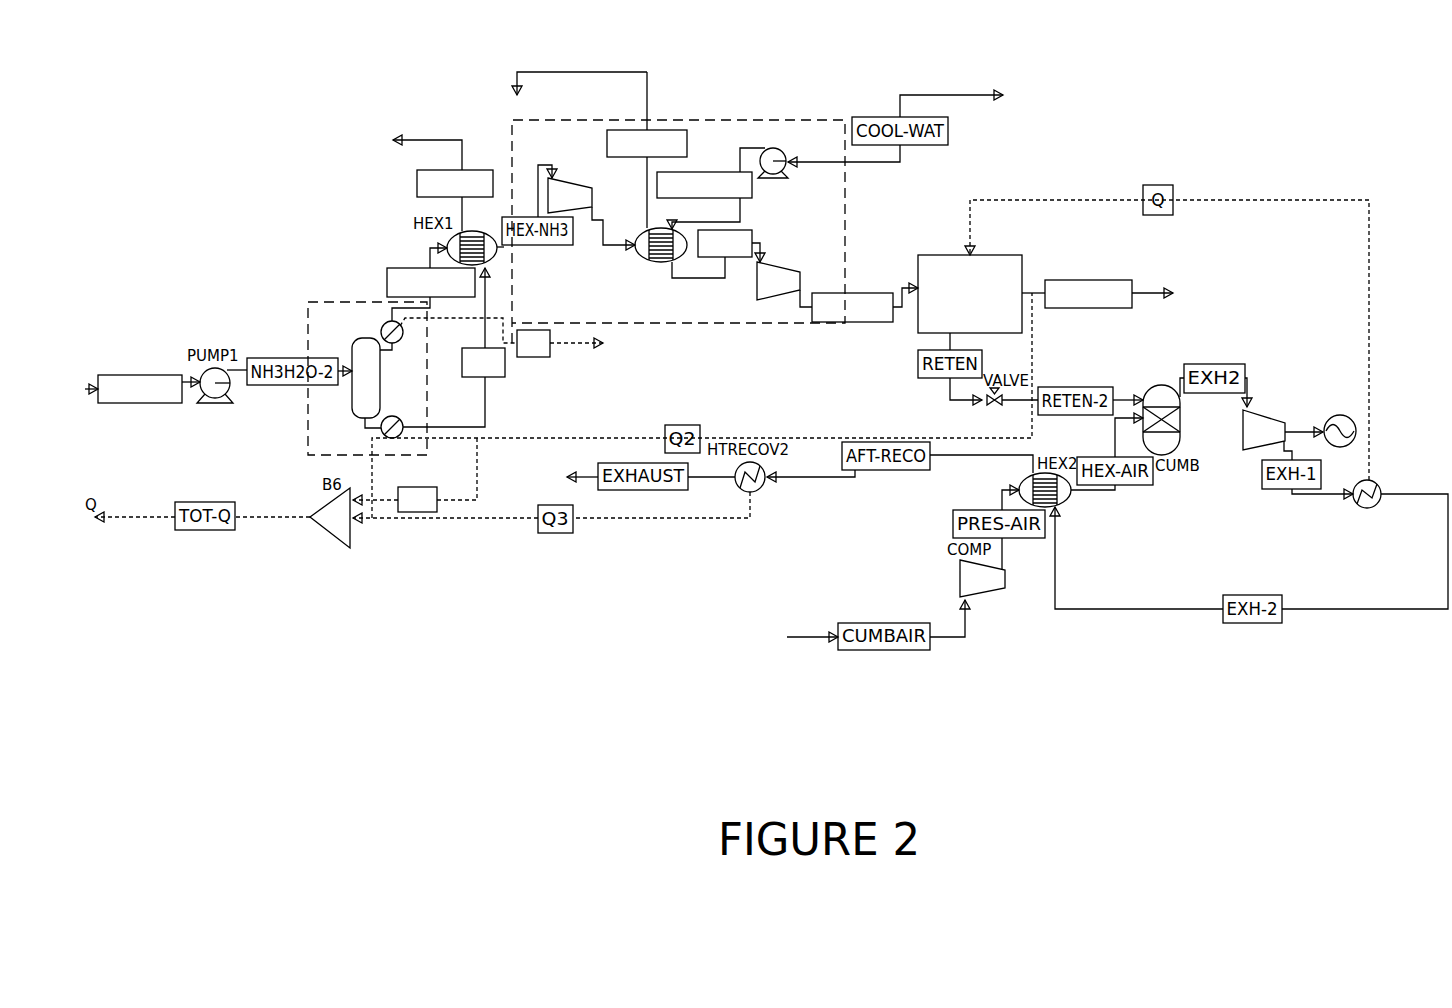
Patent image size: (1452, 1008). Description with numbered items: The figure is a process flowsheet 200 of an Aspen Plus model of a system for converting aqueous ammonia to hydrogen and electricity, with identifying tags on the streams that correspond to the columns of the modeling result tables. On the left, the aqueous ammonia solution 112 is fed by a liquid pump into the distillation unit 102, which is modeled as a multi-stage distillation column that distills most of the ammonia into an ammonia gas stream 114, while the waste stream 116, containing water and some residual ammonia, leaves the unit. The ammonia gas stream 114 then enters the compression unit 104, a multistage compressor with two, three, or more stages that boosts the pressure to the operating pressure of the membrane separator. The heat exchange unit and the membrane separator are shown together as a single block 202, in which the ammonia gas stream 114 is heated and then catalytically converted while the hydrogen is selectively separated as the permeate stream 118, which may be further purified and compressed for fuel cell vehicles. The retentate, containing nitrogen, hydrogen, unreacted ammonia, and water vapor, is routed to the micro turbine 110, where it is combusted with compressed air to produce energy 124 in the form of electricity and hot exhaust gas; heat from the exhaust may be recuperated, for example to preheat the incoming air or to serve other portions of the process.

The process flowsheet 200 is at (793, 803).
The distillation unit 102 is at (310, 310).
The compression unit 104 is at (727, 120).
The micro turbine 110 is at (1252, 407).
The aqueous ammonia solution 112 is at (152, 375).
The ammonia gas stream 114 is at (386, 272).
The waste stream 116 is at (425, 140).
The permeate stream 118 is at (1142, 290).
The energy 124 is at (1346, 446).
The block 202 is at (917, 323).